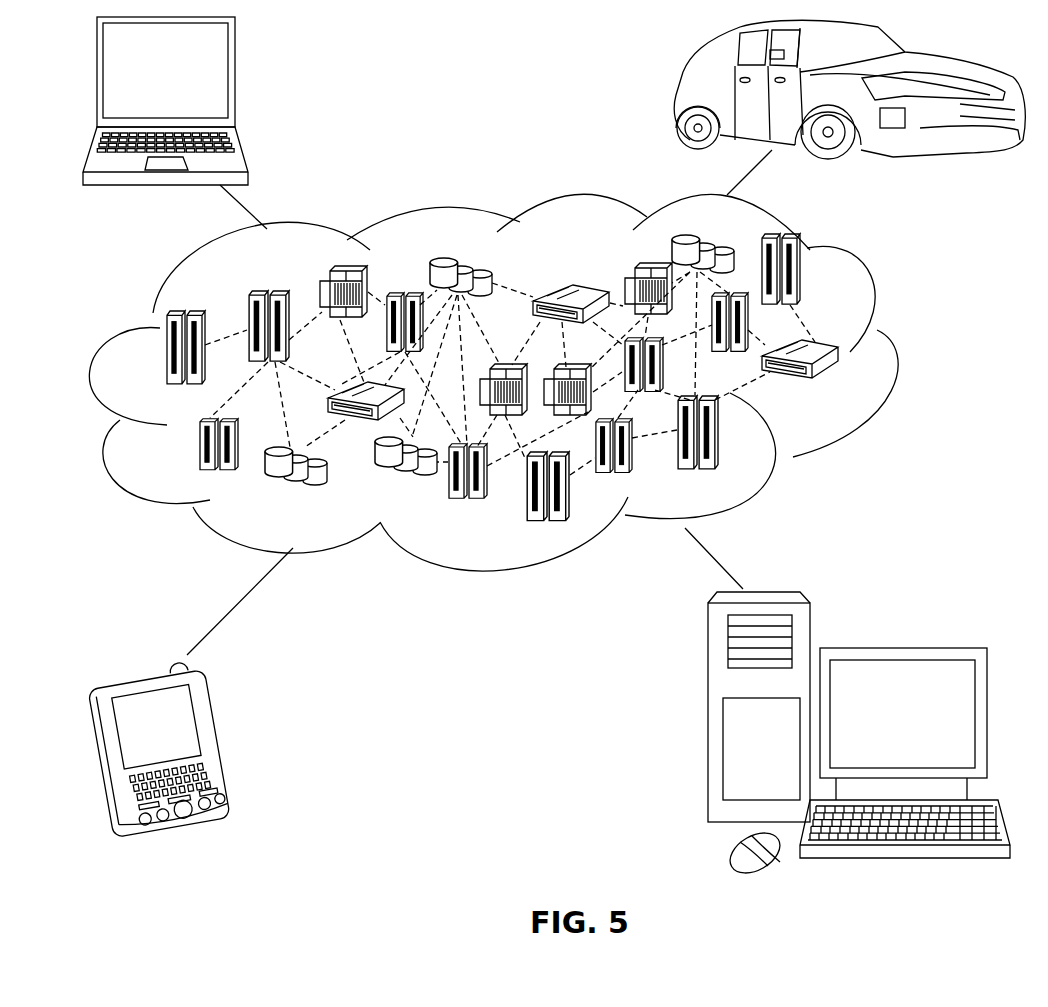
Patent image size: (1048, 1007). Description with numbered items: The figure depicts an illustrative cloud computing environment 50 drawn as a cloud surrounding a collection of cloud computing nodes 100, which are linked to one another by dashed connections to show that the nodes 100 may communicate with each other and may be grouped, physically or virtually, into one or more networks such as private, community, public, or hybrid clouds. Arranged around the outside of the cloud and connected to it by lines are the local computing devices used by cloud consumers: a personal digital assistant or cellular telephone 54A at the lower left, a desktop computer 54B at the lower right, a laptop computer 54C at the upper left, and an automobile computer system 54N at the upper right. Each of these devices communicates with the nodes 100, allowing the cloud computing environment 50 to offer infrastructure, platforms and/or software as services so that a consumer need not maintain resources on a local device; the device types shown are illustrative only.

The cloud computing environment 50 is at (900, 355).
The cloud computing nodes 100 is at (838, 384).
The personal digital assistant or cellular telephone 54A is at (228, 745).
The desktop computer 54B is at (898, 648).
The laptop computer 54C is at (237, 80).
The automobile computer system 54N is at (681, 97).